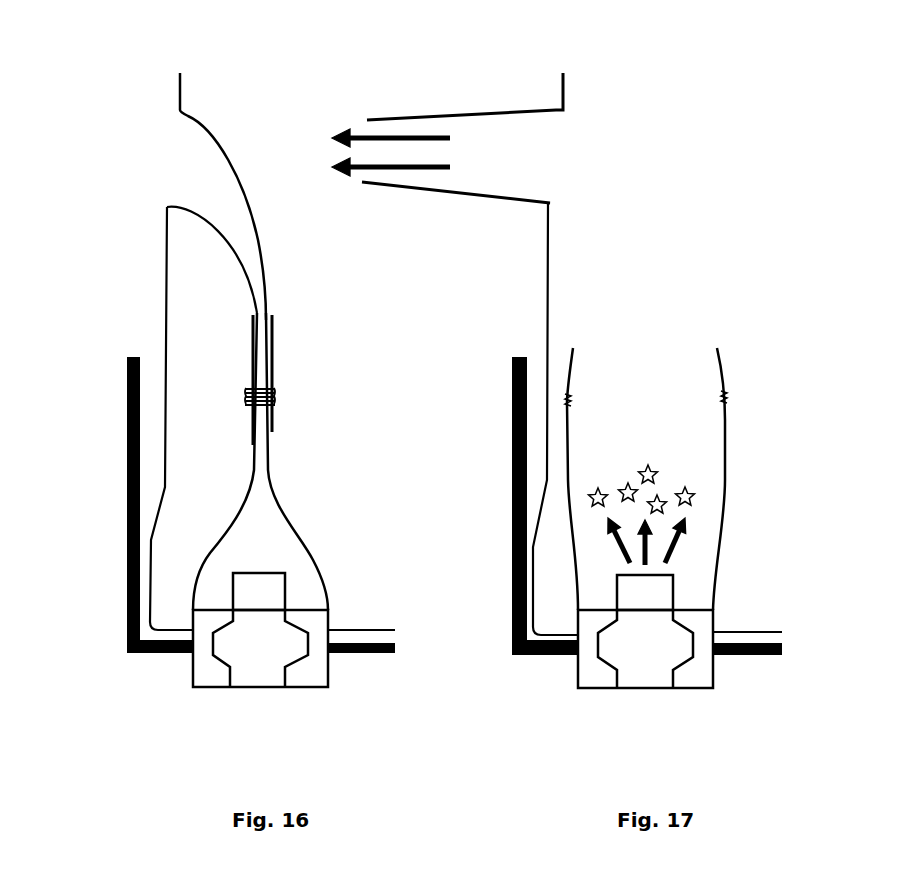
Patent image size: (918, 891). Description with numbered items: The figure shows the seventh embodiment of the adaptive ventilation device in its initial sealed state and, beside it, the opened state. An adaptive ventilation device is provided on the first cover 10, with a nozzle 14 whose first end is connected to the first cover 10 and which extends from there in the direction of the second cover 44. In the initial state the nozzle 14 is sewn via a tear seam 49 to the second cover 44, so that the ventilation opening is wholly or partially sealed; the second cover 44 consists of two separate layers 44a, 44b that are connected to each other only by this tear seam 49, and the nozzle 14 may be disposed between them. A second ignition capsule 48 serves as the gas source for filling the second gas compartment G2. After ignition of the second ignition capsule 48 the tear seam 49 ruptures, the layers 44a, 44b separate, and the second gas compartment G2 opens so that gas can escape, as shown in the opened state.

In FIG. 16, the first cover 10 is at (162, 339).
In FIG. 17, the first cover 10 is at (547, 262).
In FIG. 16, the nozzle 14 is at (230, 167).
In FIG. 17, the nozzle 14 is at (495, 110).
In FIG. 16, the second cover 44 is at (214, 461).
In FIG. 16, the first layer of the second cover 44a is at (233, 528).
In FIG. 17, the first layer of the second cover 44a is at (565, 428).
In FIG. 16, the second layer of the second cover 44b is at (293, 537).
In FIG. 17, the second layer of the second cover 44b is at (727, 432).
In FIG. 16, the second ignition capsule 48 is at (283, 587).
In FIG. 16, the tear seam 49 is at (265, 392).
In FIG. 16, the second gas compartment G2 is at (213, 592).